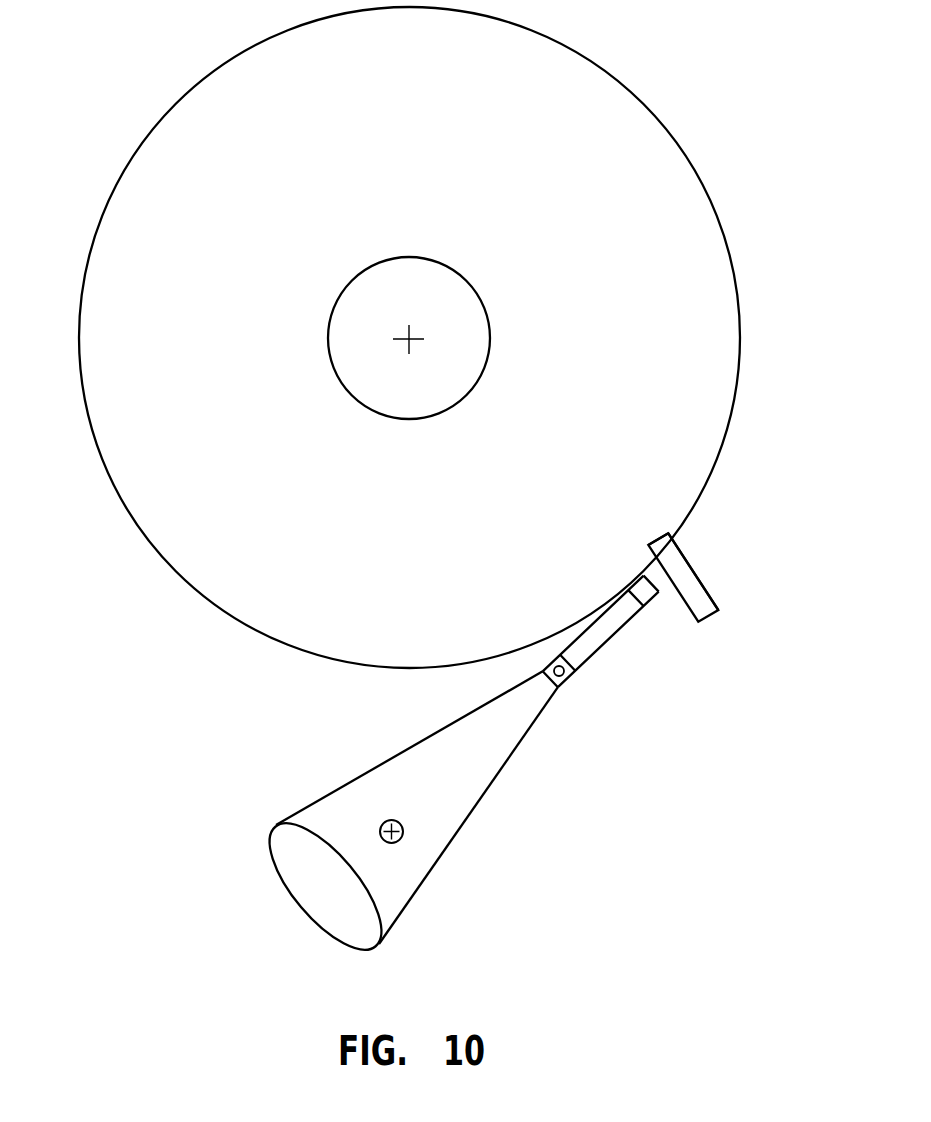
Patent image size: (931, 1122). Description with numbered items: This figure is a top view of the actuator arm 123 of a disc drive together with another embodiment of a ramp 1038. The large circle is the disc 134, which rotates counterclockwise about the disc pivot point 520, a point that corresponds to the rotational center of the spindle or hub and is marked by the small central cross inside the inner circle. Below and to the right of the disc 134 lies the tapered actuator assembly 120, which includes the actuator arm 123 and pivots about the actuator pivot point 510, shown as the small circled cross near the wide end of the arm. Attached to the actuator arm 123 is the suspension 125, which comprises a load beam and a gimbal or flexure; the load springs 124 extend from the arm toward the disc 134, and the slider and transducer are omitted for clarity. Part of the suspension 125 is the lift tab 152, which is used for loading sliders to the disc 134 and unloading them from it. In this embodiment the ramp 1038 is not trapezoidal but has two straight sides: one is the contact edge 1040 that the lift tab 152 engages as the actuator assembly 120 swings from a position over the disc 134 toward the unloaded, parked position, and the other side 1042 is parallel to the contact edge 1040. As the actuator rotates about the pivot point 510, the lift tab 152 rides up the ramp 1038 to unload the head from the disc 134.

The disc 134 is at (672, 138).
The disc pivot point 520 is at (402, 344).
The actuator assembly 120 is at (490, 796).
The actuator arm 123 is at (443, 848).
The actuator pivot point 510 is at (387, 843).
The suspension 125 is at (583, 653).
The load springs 124 is at (610, 641).
The contact edge 1040 is at (693, 613).
The ramp 1038 is at (709, 612).
The other side of ramp 1042 is at (715, 603).
The lift tab 152 is at (668, 566).